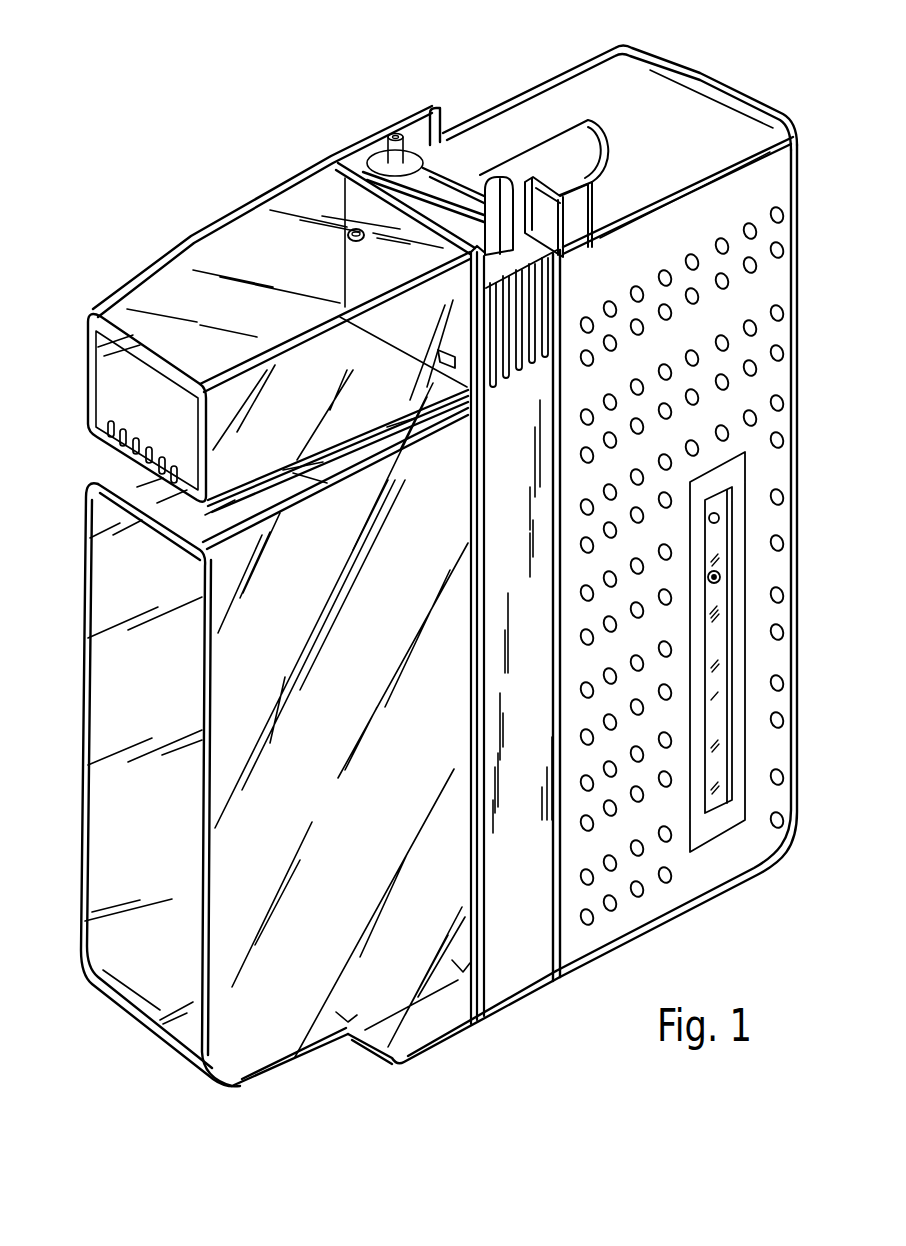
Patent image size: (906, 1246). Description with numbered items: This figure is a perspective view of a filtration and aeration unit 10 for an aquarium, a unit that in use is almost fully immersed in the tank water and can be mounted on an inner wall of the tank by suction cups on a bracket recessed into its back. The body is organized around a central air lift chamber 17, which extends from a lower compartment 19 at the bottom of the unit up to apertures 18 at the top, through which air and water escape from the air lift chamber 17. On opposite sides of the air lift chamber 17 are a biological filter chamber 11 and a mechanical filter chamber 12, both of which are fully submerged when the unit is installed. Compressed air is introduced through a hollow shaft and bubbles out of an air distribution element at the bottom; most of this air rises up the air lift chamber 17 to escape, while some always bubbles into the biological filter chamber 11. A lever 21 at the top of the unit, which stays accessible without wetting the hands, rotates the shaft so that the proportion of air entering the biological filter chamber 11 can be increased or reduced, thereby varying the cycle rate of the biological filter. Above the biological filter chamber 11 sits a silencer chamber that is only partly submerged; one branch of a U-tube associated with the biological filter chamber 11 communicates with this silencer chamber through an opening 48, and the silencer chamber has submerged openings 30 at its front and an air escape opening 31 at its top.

The filtration and aeration unit 10 is at (70, 248).
The biological filter chamber 11 is at (110, 794).
The mechanical filter chamber 12 is at (781, 467).
The air lift chamber 17 is at (503, 707).
The apertures 18 is at (556, 270).
The lower compartment 19 is at (445, 1038).
The lever 21 is at (503, 177).
The submerged openings 30 is at (110, 438).
The air escape opening 31 is at (347, 234).
The opening 48 is at (438, 361).